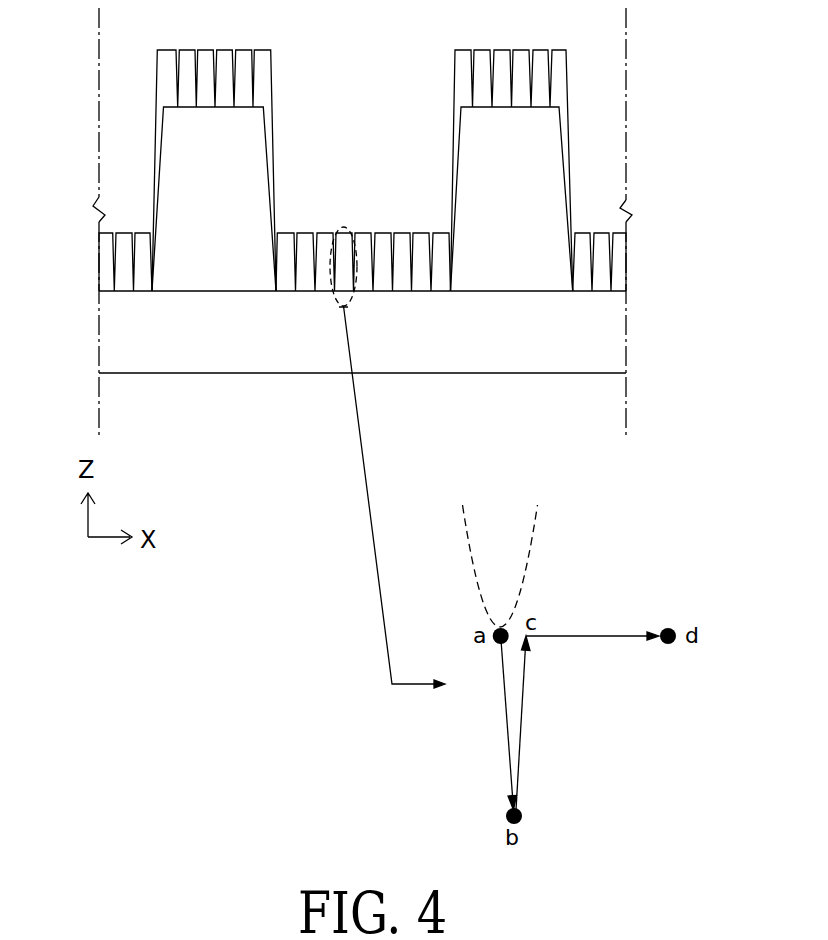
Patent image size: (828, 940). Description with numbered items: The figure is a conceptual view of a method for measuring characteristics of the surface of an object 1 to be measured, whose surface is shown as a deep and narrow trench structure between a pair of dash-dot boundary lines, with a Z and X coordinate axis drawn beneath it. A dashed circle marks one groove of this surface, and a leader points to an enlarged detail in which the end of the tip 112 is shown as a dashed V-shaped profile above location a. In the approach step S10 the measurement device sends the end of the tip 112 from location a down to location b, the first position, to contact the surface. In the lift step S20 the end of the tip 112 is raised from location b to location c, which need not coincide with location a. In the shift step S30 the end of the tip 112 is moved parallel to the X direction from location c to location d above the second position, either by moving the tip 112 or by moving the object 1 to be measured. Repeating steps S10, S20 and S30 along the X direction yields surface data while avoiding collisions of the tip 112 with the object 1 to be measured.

The object to be measured 1 is at (120, 333).
The tip 112 is at (505, 576).
The approach step S10 is at (487, 723).
The lift step S20 is at (546, 723).
The shift step S30 is at (592, 625).